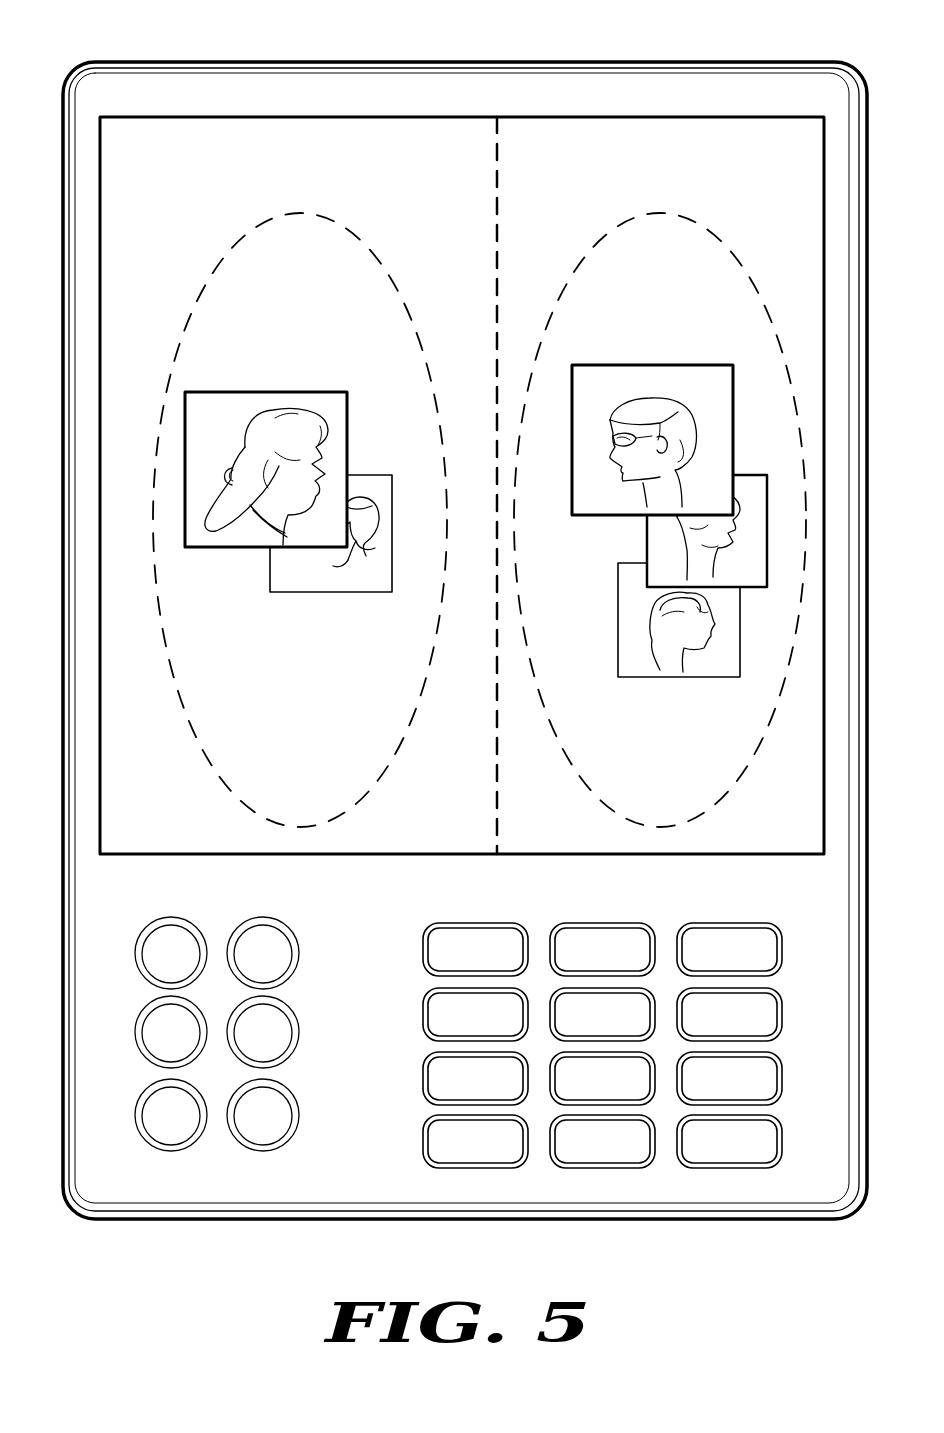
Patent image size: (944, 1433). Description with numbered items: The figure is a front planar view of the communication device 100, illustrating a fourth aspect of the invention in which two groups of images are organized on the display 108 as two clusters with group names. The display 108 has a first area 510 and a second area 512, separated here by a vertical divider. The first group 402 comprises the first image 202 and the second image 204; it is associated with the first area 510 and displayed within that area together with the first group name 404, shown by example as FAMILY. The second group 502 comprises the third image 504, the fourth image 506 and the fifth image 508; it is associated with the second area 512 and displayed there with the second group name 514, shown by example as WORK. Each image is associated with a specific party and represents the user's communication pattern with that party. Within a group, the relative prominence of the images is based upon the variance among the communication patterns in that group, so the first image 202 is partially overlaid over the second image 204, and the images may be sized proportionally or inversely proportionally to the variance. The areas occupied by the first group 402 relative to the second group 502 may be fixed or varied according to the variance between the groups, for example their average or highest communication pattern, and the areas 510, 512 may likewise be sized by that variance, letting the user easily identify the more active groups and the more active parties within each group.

The communication device 100 is at (481, 61).
The display 108 is at (358, 855).
The first image 202 is at (259, 391).
The second image 204 is at (330, 593).
The first group 402 is at (197, 250).
The first group name 404 is at (356, 182).
The second group 502 is at (553, 247).
The third image 504 is at (667, 365).
The fourth image 506 is at (647, 538).
The fifth image 508 is at (678, 678).
The first area 510 is at (145, 835).
The second area 512 is at (753, 836).
The second group name 514 is at (702, 185).